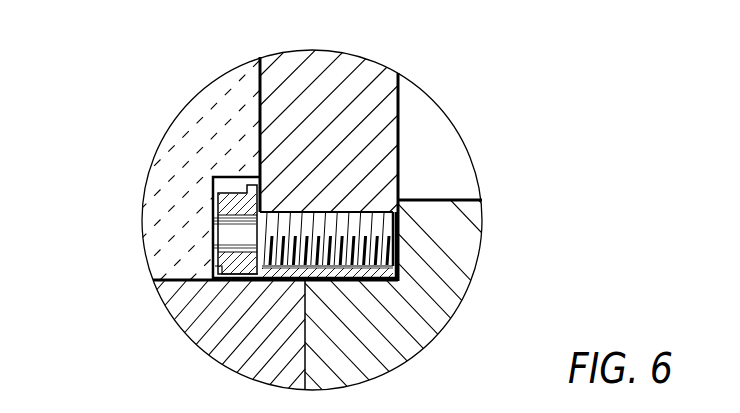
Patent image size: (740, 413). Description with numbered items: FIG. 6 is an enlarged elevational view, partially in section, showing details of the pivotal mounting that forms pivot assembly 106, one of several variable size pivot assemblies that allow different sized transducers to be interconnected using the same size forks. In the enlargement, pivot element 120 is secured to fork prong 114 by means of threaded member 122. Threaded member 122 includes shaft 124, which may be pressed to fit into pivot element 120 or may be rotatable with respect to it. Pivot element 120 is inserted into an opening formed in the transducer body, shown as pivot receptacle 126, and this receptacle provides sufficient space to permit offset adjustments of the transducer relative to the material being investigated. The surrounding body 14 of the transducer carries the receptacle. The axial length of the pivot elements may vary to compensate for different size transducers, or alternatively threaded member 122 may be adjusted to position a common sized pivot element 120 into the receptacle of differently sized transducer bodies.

The housing body 14 is at (213, 147).
The pivot assembly 106 is at (490, 221).
The fork prong 114 is at (367, 110).
The pivot element 120 is at (216, 264).
The threaded member 122 is at (260, 283).
The shaft 124 is at (232, 232).
The pivot receptacle 126 is at (228, 187).